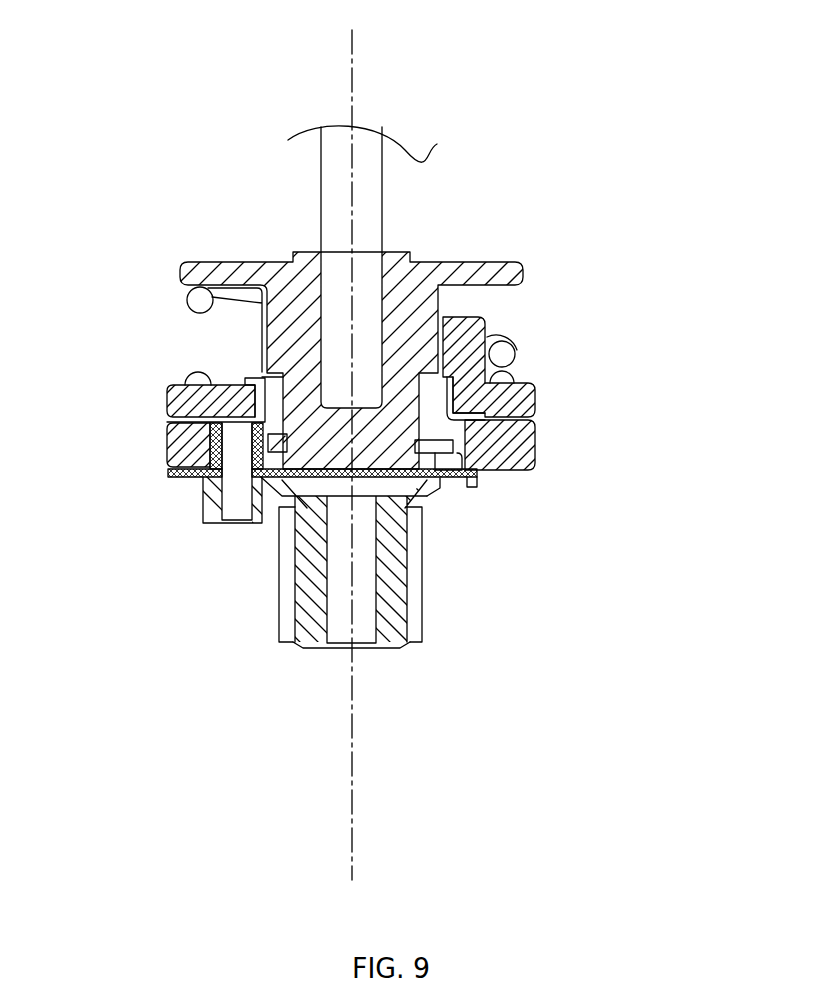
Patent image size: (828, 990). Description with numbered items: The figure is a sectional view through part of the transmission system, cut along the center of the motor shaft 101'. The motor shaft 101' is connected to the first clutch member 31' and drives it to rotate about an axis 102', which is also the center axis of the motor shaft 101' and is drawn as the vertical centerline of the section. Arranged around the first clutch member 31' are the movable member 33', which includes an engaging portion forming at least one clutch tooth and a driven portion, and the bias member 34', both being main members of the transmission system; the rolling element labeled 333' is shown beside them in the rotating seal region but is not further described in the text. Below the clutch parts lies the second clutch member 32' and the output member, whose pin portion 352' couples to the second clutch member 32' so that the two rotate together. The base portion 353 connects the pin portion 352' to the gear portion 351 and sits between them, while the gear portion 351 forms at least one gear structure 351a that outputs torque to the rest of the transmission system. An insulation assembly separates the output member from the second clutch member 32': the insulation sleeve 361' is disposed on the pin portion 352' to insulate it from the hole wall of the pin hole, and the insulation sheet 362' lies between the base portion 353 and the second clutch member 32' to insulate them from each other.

The axis 102' is at (302, 455).
The motor shaft 101' is at (338, 189).
The first clutch member 31' is at (403, 336).
The bias member 34' is at (573, 317).
The movable member 33' is at (420, 395).
The second clutch member 32' is at (420, 395).
The ball 333' is at (142, 336).
The insulation sleeve 361' is at (234, 395).
The insulation sheet 362' is at (278, 506).
The pin portion 352' is at (278, 536).
The base portion 353 is at (483, 472).
The gear portion 351 is at (354, 562).
The gear structure 351a is at (394, 574).